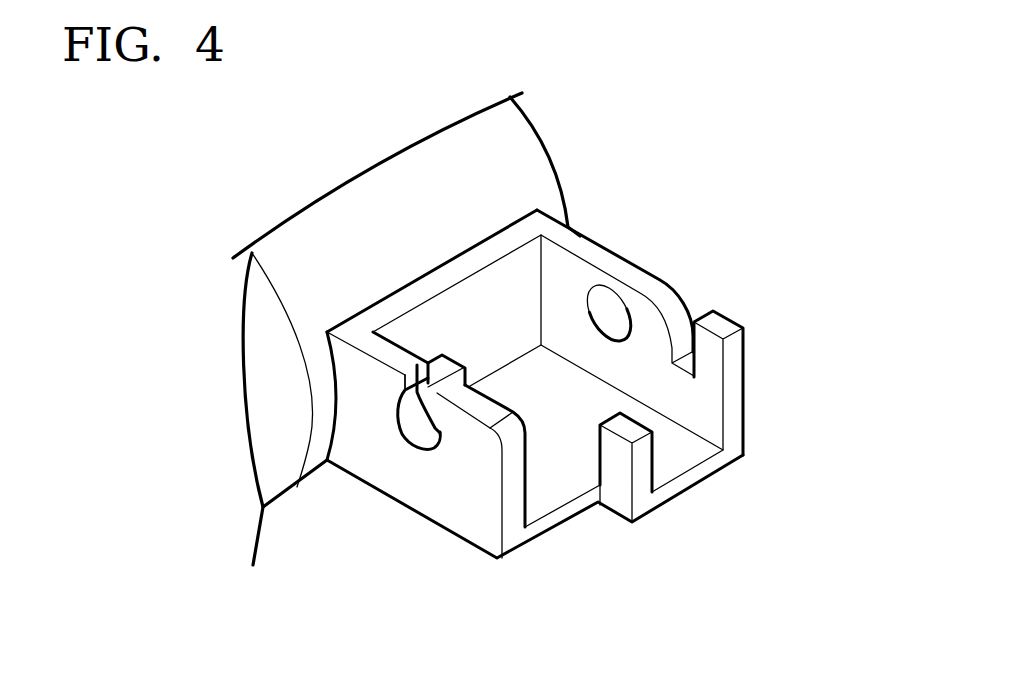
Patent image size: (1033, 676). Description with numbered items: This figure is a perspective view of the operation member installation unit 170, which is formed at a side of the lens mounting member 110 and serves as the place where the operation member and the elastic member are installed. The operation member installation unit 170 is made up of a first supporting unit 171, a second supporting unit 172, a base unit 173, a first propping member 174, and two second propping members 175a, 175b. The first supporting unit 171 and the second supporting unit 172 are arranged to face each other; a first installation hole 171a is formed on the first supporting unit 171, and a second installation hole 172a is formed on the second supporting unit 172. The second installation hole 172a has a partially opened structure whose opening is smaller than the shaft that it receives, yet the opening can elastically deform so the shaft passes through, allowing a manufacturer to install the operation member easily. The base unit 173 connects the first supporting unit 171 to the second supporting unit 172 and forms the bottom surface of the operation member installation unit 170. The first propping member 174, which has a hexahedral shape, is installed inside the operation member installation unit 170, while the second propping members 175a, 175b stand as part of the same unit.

The lens mounting member 110 is at (396, 190).
The operation member installation unit 170 is at (660, 188).
The first supporting unit 171 is at (632, 250).
The first installation hole 171a is at (603, 315).
The second supporting unit 172 is at (424, 415).
The second installation hole 172a is at (420, 437).
The base unit 173 is at (677, 448).
The first propping member 174 is at (447, 357).
The second propping member 175a is at (735, 350).
The second propping member 175b is at (641, 466).